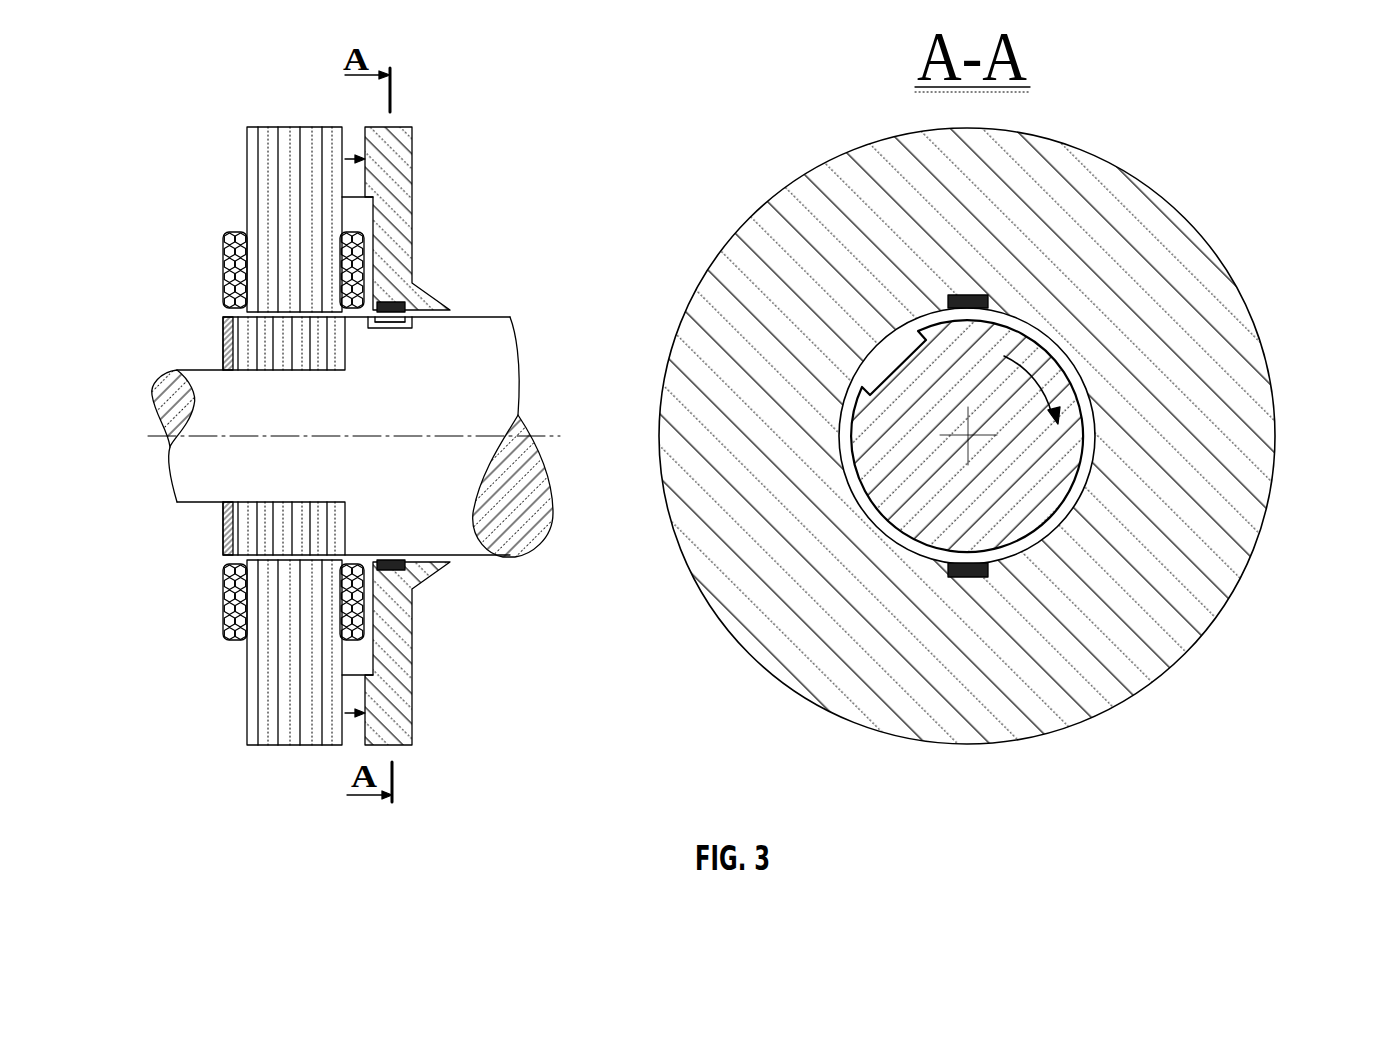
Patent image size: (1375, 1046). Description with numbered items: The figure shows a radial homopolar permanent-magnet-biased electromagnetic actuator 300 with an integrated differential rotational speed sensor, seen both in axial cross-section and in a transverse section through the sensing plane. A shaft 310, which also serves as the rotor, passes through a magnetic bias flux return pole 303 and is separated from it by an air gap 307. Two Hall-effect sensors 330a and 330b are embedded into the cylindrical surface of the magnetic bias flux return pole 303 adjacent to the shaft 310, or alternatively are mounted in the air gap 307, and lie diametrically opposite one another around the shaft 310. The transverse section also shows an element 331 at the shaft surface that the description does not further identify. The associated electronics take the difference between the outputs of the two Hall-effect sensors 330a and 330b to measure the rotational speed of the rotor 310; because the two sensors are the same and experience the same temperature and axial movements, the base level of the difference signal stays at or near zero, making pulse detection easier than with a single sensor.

The motor assembly 300 is at (185, 120).
The magnetic bias flux return pole 303 is at (412, 218).
The air gap 307 is at (446, 314).
The shaft 310 is at (495, 368).
The Hall-effect sensor 330a is at (388, 302).
The Hall-effect sensor 330b is at (394, 571).
The ring 331 is at (390, 320).